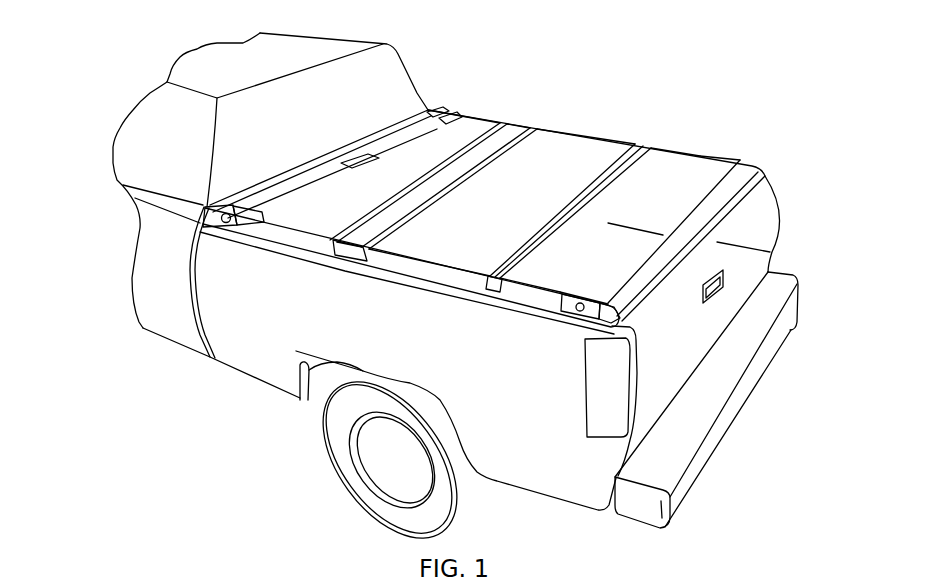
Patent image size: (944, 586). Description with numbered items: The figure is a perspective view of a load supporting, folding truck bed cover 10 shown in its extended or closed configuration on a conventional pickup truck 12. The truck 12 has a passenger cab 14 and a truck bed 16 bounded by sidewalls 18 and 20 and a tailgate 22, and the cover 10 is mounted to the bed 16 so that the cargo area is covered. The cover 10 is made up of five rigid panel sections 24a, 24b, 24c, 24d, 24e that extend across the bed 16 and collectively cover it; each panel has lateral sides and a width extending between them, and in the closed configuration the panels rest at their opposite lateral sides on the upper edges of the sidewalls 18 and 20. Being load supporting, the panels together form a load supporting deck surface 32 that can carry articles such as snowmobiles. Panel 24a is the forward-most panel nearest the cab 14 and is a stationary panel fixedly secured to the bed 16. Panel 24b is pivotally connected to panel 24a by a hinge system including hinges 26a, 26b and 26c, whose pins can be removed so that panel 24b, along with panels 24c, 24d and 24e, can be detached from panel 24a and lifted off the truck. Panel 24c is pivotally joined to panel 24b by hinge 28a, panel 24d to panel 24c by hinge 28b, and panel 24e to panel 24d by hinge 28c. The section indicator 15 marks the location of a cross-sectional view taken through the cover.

The truck bed cover 10 is at (456, 282).
The pickup truck 12 is at (346, 38).
The passenger cab 14 is at (223, 148).
The section line 15- 15 is at (608, 223).
The truck bed 16 is at (273, 287).
The sidewall 18 is at (530, 355).
The sidewall 20 is at (761, 172).
The tailgate 22 is at (776, 206).
The panel section 24a is at (413, 130).
The panel section 24b is at (493, 127).
The panel section 24c is at (533, 130).
The panel section 24d is at (603, 153).
The panel section 24e is at (712, 173).
The hinge 26a is at (255, 214).
The hinge 26b is at (353, 157).
The hinge 26c is at (467, 113).
The hinge 28a is at (377, 204).
The hinge 28b is at (462, 197).
The hinge 28c is at (560, 230).
The load supporting deck surface 32 is at (515, 165).